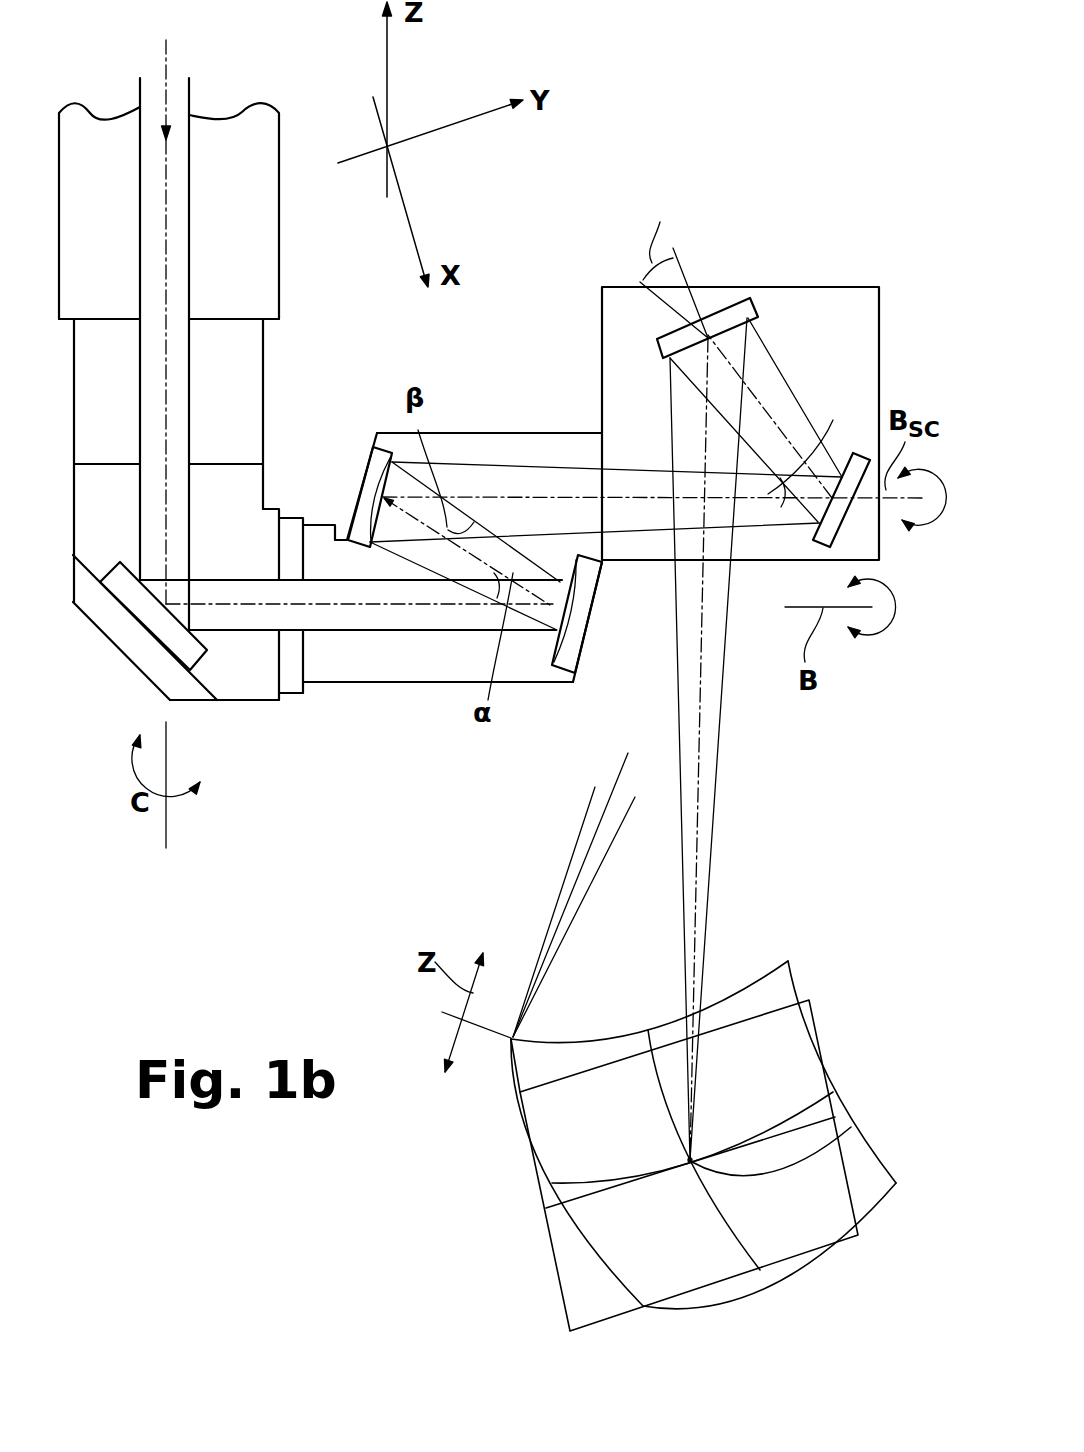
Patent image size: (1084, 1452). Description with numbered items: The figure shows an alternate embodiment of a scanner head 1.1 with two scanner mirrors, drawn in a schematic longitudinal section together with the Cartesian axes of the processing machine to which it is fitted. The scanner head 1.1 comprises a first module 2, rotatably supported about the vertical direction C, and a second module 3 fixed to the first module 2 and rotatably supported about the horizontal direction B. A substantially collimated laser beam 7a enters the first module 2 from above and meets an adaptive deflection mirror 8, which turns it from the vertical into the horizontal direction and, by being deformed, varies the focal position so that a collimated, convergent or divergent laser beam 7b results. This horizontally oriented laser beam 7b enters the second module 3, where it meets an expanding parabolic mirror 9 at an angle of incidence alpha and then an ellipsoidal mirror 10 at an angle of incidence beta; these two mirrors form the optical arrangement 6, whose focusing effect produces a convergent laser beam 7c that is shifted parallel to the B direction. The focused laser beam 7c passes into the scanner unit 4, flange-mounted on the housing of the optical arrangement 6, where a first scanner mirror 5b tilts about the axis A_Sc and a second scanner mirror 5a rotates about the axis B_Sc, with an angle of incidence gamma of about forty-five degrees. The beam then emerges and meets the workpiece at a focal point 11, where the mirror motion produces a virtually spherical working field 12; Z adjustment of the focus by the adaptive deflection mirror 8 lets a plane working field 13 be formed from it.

The scanner head 1.1 is at (447, 340).
The first module 2 is at (73, 548).
The second module 3 is at (556, 688).
The scanner unit 4 is at (845, 287).
The scanner mirror 5a is at (837, 513).
The scanner mirror 5b is at (745, 300).
The optical arrangement 6 is at (462, 433).
The collimated laser beam 7a is at (167, 387).
The horizontally oriented laser beam 7b is at (338, 603).
The convergent laser beam 7c is at (528, 497).
The adaptive deflection mirror 8 is at (150, 617).
The expanding parabolic mirror 9 is at (577, 613).
The ellipsoidal mirror 10 is at (372, 482).
The focal point 11 is at (836, 1130).
The working field 12 is at (788, 961).
The plane working field 13 is at (554, 1267).